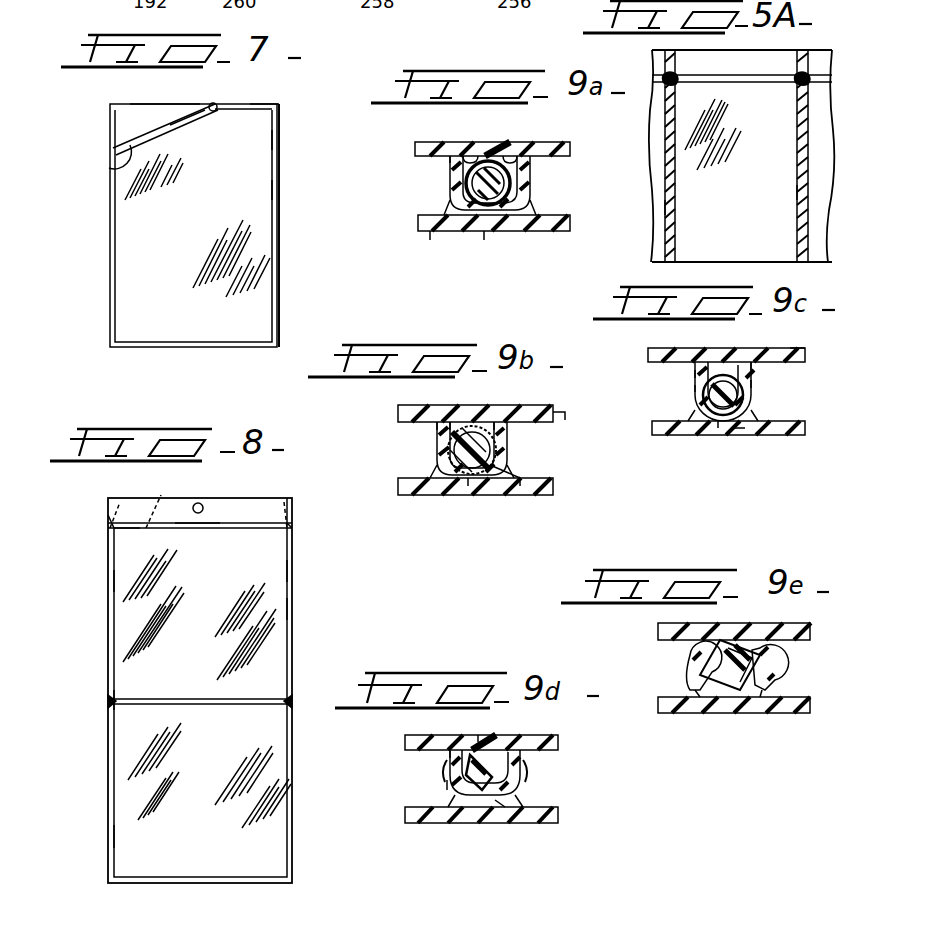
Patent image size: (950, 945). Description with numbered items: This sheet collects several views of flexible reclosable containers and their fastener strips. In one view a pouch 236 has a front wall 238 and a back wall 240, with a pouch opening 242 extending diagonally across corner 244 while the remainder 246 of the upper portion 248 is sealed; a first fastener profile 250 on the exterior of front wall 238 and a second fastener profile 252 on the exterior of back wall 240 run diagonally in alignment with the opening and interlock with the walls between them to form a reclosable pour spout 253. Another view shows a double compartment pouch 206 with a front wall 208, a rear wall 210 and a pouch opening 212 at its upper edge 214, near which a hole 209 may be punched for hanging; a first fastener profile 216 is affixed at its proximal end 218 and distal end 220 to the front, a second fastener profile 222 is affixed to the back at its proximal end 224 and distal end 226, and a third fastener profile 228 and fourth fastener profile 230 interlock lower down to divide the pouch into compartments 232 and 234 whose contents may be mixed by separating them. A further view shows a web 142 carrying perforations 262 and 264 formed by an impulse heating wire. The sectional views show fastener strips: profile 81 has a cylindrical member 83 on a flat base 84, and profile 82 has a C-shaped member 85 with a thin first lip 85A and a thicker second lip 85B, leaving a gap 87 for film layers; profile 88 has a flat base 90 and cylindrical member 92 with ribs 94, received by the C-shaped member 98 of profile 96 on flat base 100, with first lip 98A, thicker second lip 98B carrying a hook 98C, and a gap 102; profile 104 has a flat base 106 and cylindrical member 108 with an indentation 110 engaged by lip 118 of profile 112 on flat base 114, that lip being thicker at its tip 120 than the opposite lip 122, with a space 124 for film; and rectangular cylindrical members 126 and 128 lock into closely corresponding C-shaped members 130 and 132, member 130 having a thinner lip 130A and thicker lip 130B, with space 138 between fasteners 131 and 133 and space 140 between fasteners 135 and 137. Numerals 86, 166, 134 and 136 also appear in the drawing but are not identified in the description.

In FIG. 7, the pouch 236 is at (278, 262).
In FIG. 7, the front wall 238 is at (262, 188).
In FIG. 7, the back wall 240 is at (299, 130).
In FIG. 7, the pouch opening 242 is at (114, 131).
In FIG. 7, the corner 244 is at (113, 105).
In FIG. 7, the remainder 246 is at (236, 104).
In FIG. 7, the upper portion 248 is at (278, 104).
In FIG. 7, the first fastener profile 250 is at (122, 162).
In FIG. 7, the second fastener profile 252 is at (182, 130).
In FIG. 7, the reclosable pour spout 253 is at (148, 102).
In FIG. 8, the pouch 206 is at (291, 678).
In FIG. 8, the front wall 208 is at (284, 612).
In FIG. 8, the hole 209 is at (198, 524).
In FIG. 8, the rear wall 210 is at (261, 572).
In FIG. 8, the pouch opening 212 is at (231, 490).
In FIG. 8, the upper edge 214 is at (291, 500).
In FIG. 8, the first fastener profile 216 is at (147, 532).
In FIG. 8, the proximal end 218 is at (110, 524).
In FIG. 8, the distal end 220 is at (291, 524).
In FIG. 8, the second fastener profile 222 is at (157, 500).
In FIG. 8, the proximal end 224 is at (122, 490).
In FIG. 8, the distal end 226 is at (228, 500).
In FIG. 8, the third fastener profile 228 is at (213, 706).
In FIG. 8, the fourth fastener profile 230 is at (133, 697).
In FIG. 8, the compartment 232 is at (131, 583).
In FIG. 8, the compartment 234 is at (134, 834).
In FIG. 5A, the web 142 is at (695, 219).
In FIG. 5A, the perforation 262 is at (667, 204).
In FIG. 5A, the perforation 264 is at (800, 193).
In FIG. 9a, the fastener profile 81 is at (478, 142).
In FIG. 9a, the fastener profile 82 is at (520, 231).
In FIG. 9a, the cylindrical member 83 is at (496, 180).
In FIG. 9a, the flat base 84 is at (540, 142).
In FIG. 9a, the C-shaped member 85 is at (540, 194).
In FIG. 9a, the first lip 85A is at (448, 142).
In FIG. 9a, the second lip 85B is at (513, 148).
In FIG. 9a, the lower panel edge 86 is at (434, 231).
In FIG. 9a, the gap 87 is at (484, 231).
In FIG. 9b, the fastener profile 88 is at (553, 422).
In FIG. 9b, the flat base 90 is at (543, 405).
In FIG. 9b, the cylindrical member 92 is at (503, 473).
In FIG. 9b, the ribs 94 is at (500, 440).
In FIG. 9b, the fastener profile 96 is at (419, 502).
In FIG. 9b, the C-shaped member 98 is at (438, 445).
In FIG. 9b, the first lip 98A is at (425, 405).
In FIG. 9b, the second lip 98B is at (507, 418).
In FIG. 9b, the hook 98C is at (460, 414).
In FIG. 9b, the flat base 100 is at (520, 495).
In FIG. 9b, the gap 102 is at (468, 495).
In FIG. 9c, the fastener profile 104 is at (820, 343).
In FIG. 9c, the flat base 106 is at (658, 348).
In FIG. 9c, the cylindrical member 108 is at (760, 400).
In FIG. 9c, the indentation 110 is at (705, 392).
In FIG. 9c, the fastener profile 112 is at (740, 444).
In FIG. 9c, the flat base 114 is at (790, 435).
In FIG. 9c, the lip 118 is at (765, 382).
In FIG. 9c, the tip 120 is at (760, 370).
In FIG. 9c, the lip 122 is at (690, 370).
In FIG. 9c, the space 124 is at (718, 428).
In FIG. 9c, the clip arm 166 is at (692, 382).
In FIG. 9d, the cylindrical member 126 is at (472, 810).
In FIG. 9d, the C-shaped member 130 is at (522, 776).
In FIG. 9d, the lip 130A is at (440, 740).
In FIG. 9d, the lip 130B is at (515, 745).
In FIG. 9d, the fastener 131 is at (478, 735).
In FIG. 9d, the fastener 133 is at (446, 825).
In FIG. 9d, the clip base 134 is at (496, 815).
In FIG. 9d, the space 138 is at (440, 790).
In FIG. 9e, the cylindrical member 128 is at (750, 713).
In FIG. 9e, the C-shaped member 132 is at (780, 665).
In FIG. 9e, the fastener 135 is at (728, 620).
In FIG. 9e, the lower lobe 136 is at (700, 700).
In FIG. 9e, the fastener 137 is at (716, 713).
In FIG. 9e, the space 140 is at (762, 700).